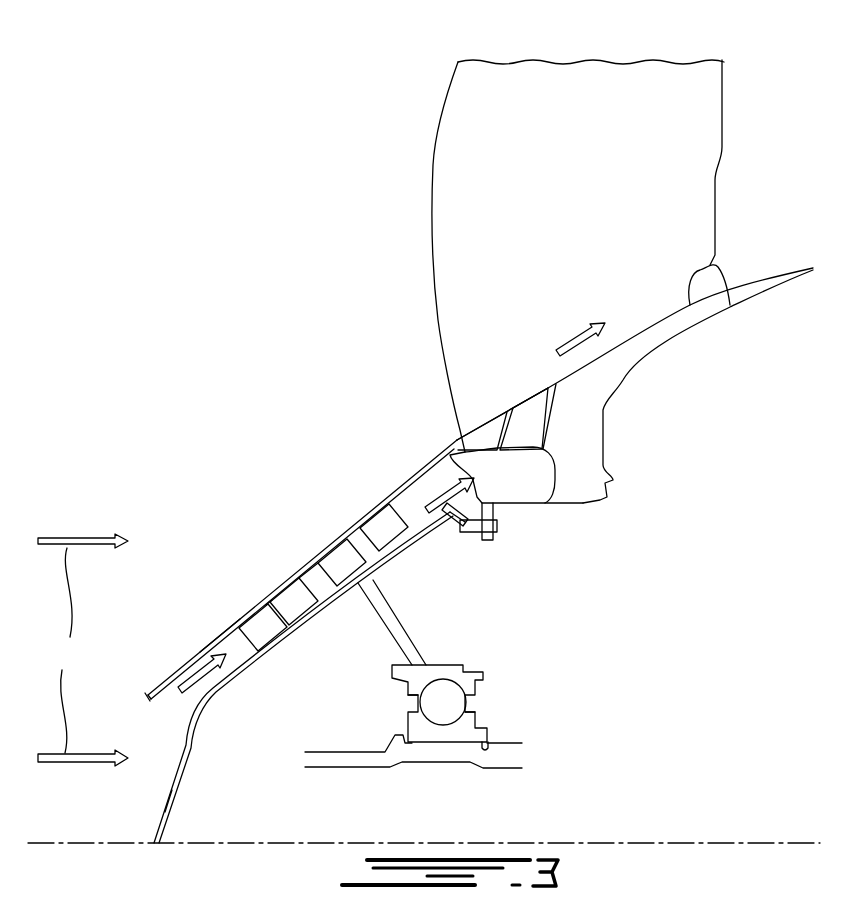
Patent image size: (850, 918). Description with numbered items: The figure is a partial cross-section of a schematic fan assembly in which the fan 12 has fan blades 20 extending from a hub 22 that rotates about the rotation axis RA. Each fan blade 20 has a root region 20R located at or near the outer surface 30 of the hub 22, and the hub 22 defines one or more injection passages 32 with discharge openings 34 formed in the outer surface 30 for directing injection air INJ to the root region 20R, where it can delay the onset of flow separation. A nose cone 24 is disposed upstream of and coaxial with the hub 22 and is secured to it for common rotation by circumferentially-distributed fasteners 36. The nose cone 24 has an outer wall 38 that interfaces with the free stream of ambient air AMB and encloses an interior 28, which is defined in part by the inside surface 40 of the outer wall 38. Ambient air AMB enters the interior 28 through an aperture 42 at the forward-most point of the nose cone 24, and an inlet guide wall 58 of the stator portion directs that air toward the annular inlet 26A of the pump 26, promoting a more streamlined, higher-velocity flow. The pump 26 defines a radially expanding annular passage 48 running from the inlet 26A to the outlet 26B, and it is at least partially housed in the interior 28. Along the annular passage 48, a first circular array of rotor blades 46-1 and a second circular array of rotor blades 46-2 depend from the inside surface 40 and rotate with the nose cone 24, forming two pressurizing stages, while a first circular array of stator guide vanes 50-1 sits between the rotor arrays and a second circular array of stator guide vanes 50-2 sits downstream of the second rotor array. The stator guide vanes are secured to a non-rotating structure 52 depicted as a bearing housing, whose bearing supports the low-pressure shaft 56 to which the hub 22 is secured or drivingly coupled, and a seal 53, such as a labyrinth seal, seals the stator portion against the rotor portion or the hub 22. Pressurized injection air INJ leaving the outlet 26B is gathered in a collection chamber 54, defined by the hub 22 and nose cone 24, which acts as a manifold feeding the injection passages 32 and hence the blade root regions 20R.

The fan 12 is at (362, 235).
The fan blade 20 is at (586, 187).
The root region 20R is at (478, 342).
The hub 22 is at (603, 377).
The nose cone 24 is at (147, 696).
The pump 26 is at (503, 626).
The inlet of pump 26A is at (187, 663).
The outlet of pump 26B is at (410, 483).
The interior 28 is at (273, 786).
The outer surface 30 is at (711, 268).
The injection passage 32 is at (513, 427).
The discharge opening 34 is at (547, 388).
The fastener 36 is at (497, 527).
The outer wall 38 is at (270, 603).
The inside surface 40 is at (230, 633).
The aperture 42 is at (148, 793).
The first circular array of rotor blades 46-1 is at (245, 624).
The second circular array of rotor blades 46-2 is at (334, 548).
The annular passage 48 is at (312, 577).
The first circular array of stator guide vanes 50-1 is at (308, 605).
The second circular array of stator guide vanes 50-2 is at (364, 520).
The non-rotating structure 52 is at (468, 682).
The seal 53 is at (470, 540).
The collection chamber 54 is at (513, 475).
The low-pressure shaft 56 is at (498, 755).
The inlet guide wall 58 is at (177, 787).
The ambient air AMB is at (83, 650).
The injection air INJ is at (450, 522).
The rotation axis RA is at (742, 838).